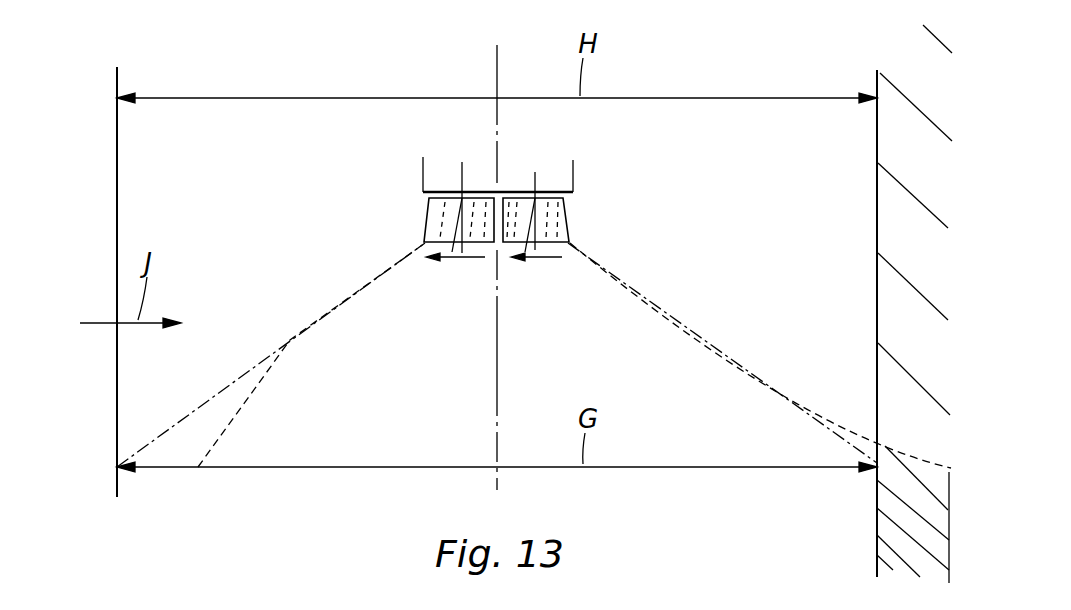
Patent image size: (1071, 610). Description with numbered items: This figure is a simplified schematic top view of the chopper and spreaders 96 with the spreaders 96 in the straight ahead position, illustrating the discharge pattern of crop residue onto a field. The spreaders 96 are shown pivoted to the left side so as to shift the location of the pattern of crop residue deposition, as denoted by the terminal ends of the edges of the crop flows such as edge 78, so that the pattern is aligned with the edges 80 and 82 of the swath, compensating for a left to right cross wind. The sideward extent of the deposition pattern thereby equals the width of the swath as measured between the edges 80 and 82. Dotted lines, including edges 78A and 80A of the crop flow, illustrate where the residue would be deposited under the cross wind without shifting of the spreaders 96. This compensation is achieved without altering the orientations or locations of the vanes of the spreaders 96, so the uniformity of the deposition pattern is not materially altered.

The edge of the crop flow 78 is at (227, 385).
The edge of the crop flow under cross wind 78A is at (242, 390).
The edge of the swath 80 is at (117, 383).
The edge of the crop flow under cross wind 80A is at (800, 401).
The edge of the swath 82 is at (877, 340).
The spreaders 96 is at (415, 213).